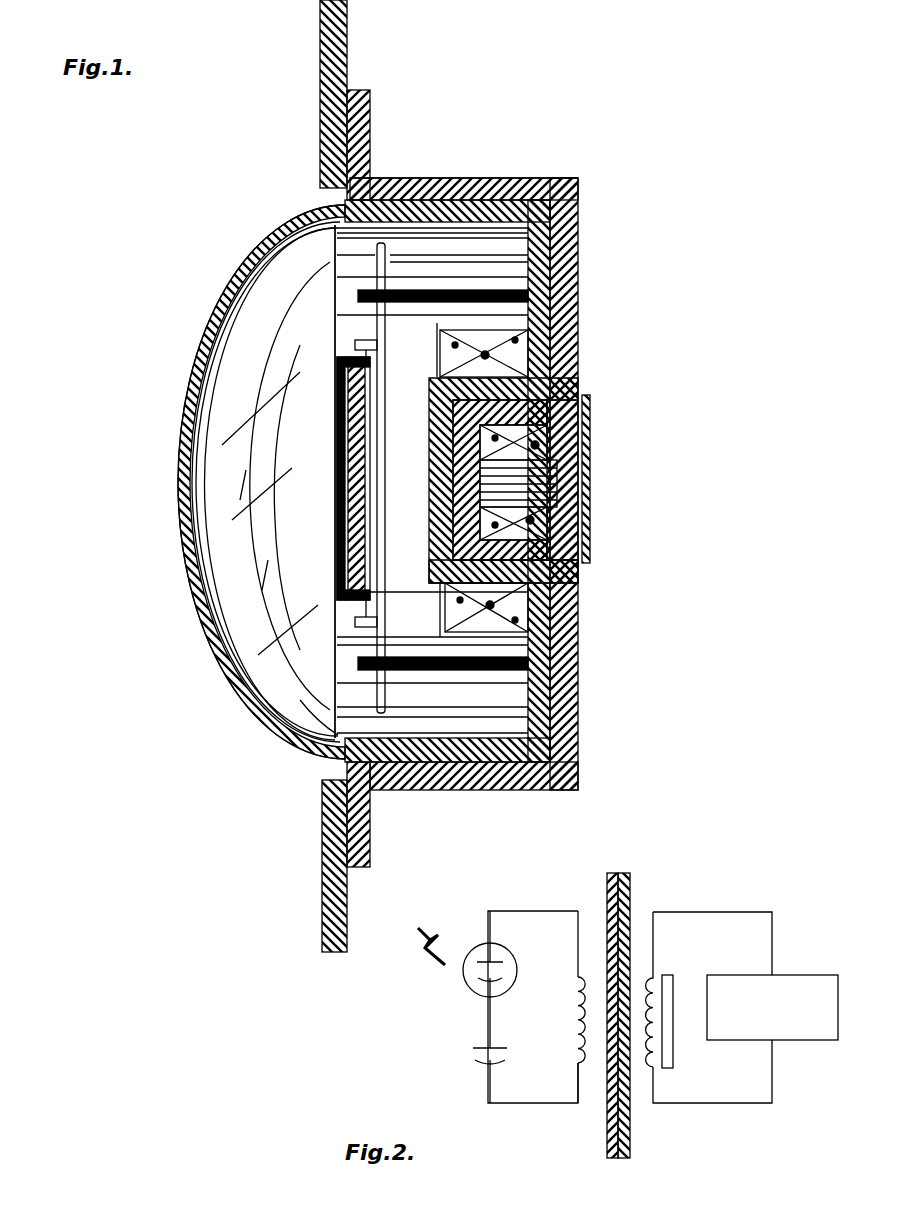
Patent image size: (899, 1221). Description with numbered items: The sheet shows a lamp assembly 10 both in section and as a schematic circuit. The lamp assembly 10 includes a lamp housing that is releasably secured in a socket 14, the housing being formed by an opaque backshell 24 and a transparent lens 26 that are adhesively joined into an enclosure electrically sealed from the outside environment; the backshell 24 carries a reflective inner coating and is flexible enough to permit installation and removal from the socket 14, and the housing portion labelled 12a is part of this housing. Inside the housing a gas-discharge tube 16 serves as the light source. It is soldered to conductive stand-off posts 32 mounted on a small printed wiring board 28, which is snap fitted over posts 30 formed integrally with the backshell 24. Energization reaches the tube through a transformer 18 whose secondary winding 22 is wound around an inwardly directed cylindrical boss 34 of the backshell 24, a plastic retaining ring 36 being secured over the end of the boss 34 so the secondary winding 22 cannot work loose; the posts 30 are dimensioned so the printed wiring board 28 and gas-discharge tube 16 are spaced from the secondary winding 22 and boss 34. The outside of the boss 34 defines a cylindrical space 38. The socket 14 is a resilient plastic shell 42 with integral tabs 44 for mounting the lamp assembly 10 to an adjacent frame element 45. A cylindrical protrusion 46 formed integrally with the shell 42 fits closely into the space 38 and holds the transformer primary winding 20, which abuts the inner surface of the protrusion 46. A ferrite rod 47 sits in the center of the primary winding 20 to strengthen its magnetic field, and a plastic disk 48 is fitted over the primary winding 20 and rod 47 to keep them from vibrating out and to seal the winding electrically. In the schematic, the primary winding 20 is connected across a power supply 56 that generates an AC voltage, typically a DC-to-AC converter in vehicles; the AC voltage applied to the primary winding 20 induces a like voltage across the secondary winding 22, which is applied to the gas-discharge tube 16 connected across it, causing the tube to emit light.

In FIG. 1, the lamp assembly 10 is at (112, 500).
In FIG. 2, the lamp assembly 10 is at (732, 880).
In FIG. 1, the dome enclosure 12a is at (300, 762).
In FIG. 1, the socket 14 is at (489, 176).
In FIG. 1, the gas-discharge tube 16 is at (335, 452).
In FIG. 2, the gas-discharge tube 16 is at (470, 988).
In FIG. 1, the transformer 18 is at (505, 320).
In FIG. 2, the transformer 18 is at (578, 985).
In FIG. 1, the primary winding 20 is at (540, 520).
In FIG. 2, the primary winding 20 is at (657, 1062).
In FIG. 1, the secondary winding 22 is at (490, 632).
In FIG. 2, the secondary winding 22 is at (573, 1043).
In FIG. 1, the backshell 24 is at (270, 232).
In FIG. 2, the backshell 24 is at (607, 893).
In FIG. 1, the lens 26 is at (180, 442).
In FIG. 1, the printed wiring board 28 is at (357, 688).
In FIG. 1, the posts 30 is at (515, 292).
In FIG. 1, the conductive stand-off posts 32 is at (355, 342).
In FIG. 1, the cylindrical boss 34 is at (425, 435).
In FIG. 1, the retaining ring 36 is at (335, 380).
In FIG. 1, the cylindrical space 38 is at (570, 392).
In FIG. 1, the shell 42 is at (556, 200).
In FIG. 2, the shell 42 is at (632, 898).
In FIG. 1, the tabs 44 is at (352, 133).
In FIG. 1, the frame element 45 is at (338, 58).
In FIG. 1, the cylindrical protrusion 46 is at (556, 568).
In FIG. 1, the ferrite rod 47 is at (548, 490).
In FIG. 2, the ferrite rod 47 is at (675, 1048).
In FIG. 1, the plastic disk 48 is at (592, 495).
In FIG. 2, the power supply 56 is at (800, 975).